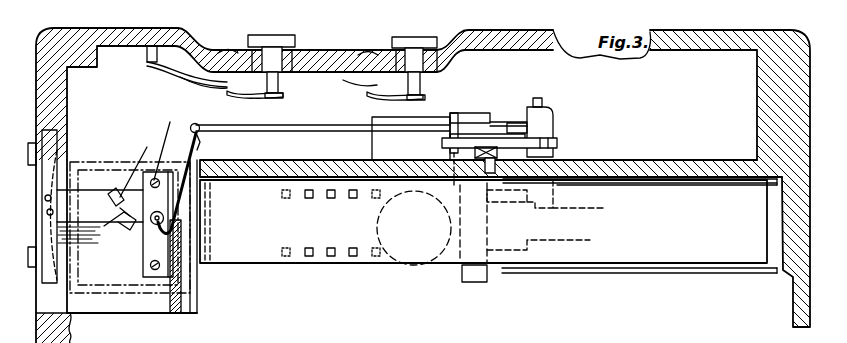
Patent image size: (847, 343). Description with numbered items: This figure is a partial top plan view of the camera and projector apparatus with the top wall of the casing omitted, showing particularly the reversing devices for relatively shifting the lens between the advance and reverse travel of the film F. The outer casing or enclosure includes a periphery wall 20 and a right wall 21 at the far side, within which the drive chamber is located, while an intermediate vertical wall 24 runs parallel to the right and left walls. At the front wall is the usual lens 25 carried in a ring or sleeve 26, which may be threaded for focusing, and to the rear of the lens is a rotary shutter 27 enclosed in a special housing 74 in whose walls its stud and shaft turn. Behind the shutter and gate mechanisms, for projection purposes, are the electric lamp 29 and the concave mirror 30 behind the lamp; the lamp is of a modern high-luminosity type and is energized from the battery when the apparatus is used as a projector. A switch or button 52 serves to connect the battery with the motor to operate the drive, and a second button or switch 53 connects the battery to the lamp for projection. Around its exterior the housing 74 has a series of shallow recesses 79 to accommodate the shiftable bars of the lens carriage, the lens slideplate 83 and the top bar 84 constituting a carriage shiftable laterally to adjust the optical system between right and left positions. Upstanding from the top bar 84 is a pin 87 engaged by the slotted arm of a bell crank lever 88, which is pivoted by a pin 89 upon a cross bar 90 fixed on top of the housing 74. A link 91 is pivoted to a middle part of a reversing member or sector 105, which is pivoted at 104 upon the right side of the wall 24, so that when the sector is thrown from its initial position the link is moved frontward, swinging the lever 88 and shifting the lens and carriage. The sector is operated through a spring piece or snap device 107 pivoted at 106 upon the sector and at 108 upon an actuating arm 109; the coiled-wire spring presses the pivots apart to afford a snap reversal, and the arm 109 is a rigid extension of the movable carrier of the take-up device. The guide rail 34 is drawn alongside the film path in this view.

The periphery wall 20 is at (67, 103).
The right wall 21 is at (700, 52).
The intermediate vertical wall 24 is at (675, 160).
The lens 25 is at (100, 217).
The ring or sleeve 26 is at (33, 152).
The shutter 27 is at (160, 300).
The electric lamp 29 is at (388, 268).
The concave mirror 30 is at (482, 283).
The guide rail 34 is at (748, 274).
The switch or button 52 is at (296, 41).
The second button or switch 53 is at (392, 41).
The housing 74 is at (130, 252).
The shallow recesses 79 is at (100, 248).
The lens slideplate 83 is at (52, 328).
The top bar 84 is at (110, 209).
The pin 87 is at (132, 167).
The bell crank lever 88 is at (200, 143).
The pin 89 is at (150, 222).
The cross bar 90 is at (177, 172).
The link 91 is at (323, 118).
The pivot 104 is at (480, 150).
The reversing member or sector 105 is at (557, 143).
The pivot 106 is at (442, 146).
The spring piece or snap device 107 is at (458, 118).
The pivot 108 is at (541, 100).
The actuating arm 109 is at (557, 125).
The film frame F is at (318, 265).